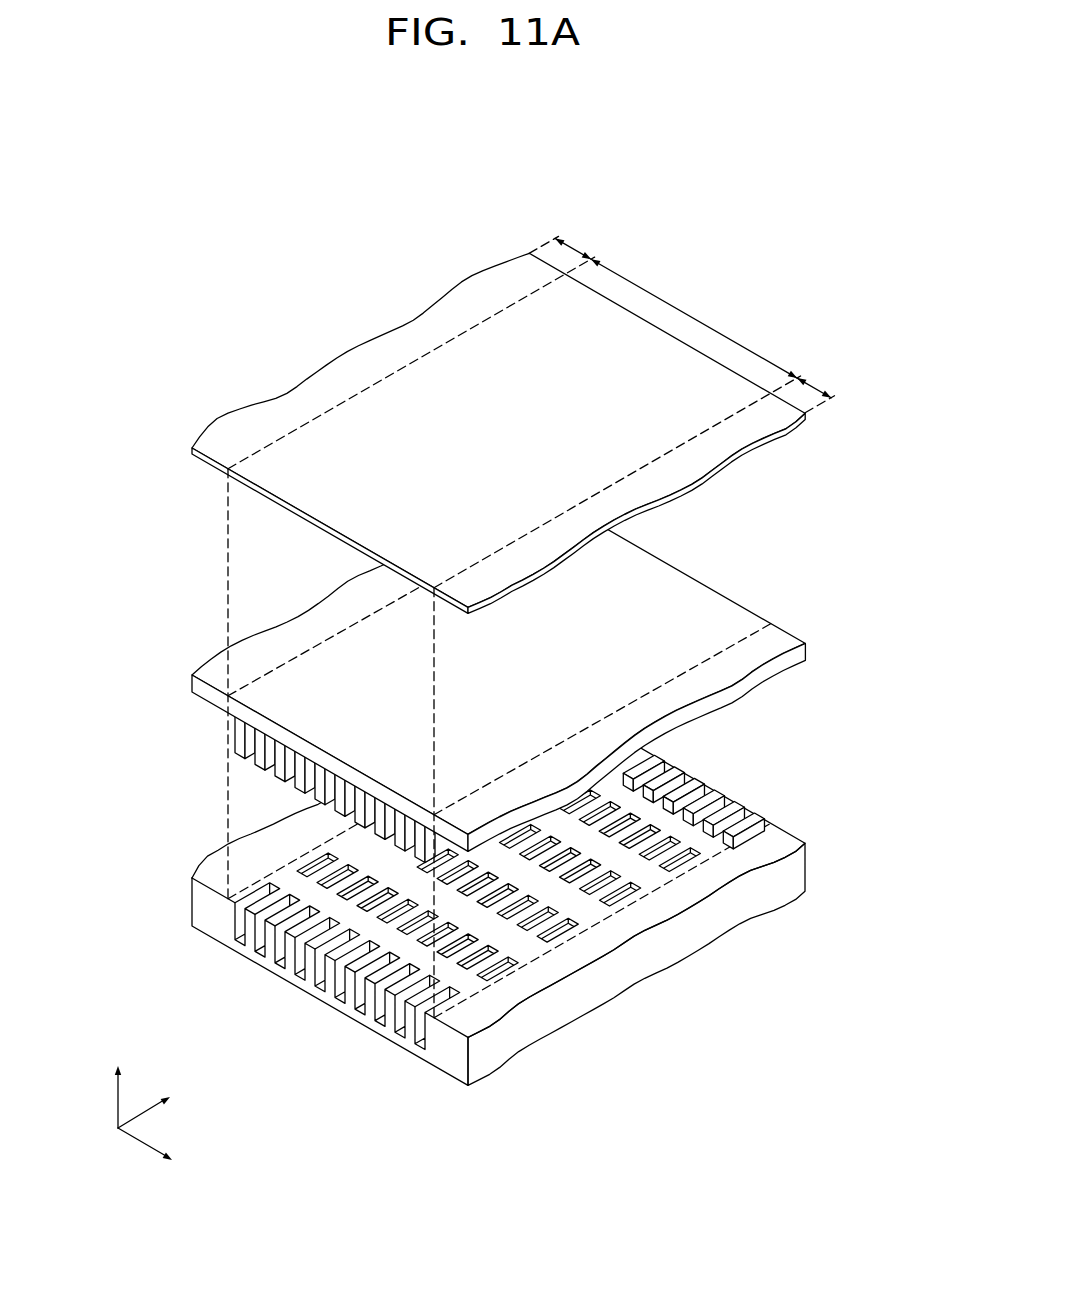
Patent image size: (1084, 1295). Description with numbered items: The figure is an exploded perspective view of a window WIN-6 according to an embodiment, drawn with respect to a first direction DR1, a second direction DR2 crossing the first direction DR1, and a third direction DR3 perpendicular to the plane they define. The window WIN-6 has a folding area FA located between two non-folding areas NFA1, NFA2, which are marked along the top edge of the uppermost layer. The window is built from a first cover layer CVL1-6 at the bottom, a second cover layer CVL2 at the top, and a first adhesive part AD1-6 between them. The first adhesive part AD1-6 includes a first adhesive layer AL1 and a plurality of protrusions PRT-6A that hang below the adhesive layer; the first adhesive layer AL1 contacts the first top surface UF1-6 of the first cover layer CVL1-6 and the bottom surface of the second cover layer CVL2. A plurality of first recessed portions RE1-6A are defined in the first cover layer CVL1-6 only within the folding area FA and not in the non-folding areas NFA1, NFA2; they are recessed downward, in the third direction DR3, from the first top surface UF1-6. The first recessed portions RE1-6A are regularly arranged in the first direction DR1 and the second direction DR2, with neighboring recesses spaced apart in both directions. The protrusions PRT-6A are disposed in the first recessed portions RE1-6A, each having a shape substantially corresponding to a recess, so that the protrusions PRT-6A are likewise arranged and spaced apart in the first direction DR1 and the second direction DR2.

The window WIN-6 is at (723, 218).
The non-folding area NFA1 is at (591, 241).
The folding area FA is at (694, 318).
The non-folding area NFA2 is at (832, 383).
The second cover layer CVL2 is at (806, 414).
The first adhesive part AD1-6 is at (511, 667).
The first adhesive layer AL1 is at (204, 687).
The protrusions PRT-6A is at (242, 733).
The first cover layer CVL1-6 is at (796, 873).
The first recessed portions RE1-6A is at (240, 922).
The first top surface UF1-6 is at (590, 918).
The first direction DR1 is at (170, 1156).
The second direction DR2 is at (170, 1103).
The third direction DR3 is at (117, 1083).